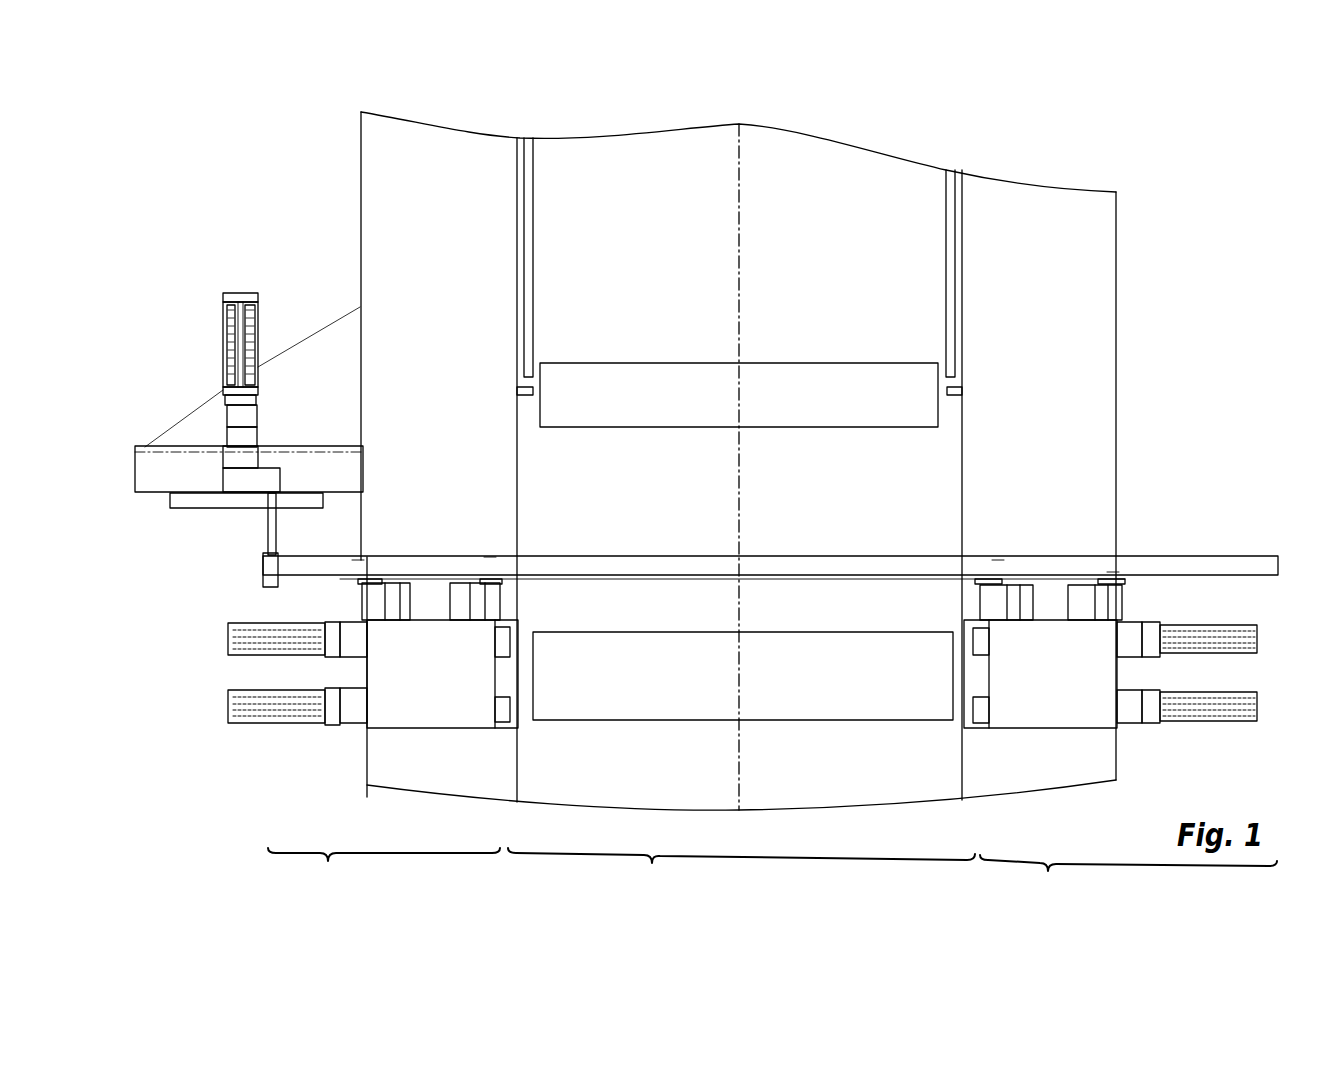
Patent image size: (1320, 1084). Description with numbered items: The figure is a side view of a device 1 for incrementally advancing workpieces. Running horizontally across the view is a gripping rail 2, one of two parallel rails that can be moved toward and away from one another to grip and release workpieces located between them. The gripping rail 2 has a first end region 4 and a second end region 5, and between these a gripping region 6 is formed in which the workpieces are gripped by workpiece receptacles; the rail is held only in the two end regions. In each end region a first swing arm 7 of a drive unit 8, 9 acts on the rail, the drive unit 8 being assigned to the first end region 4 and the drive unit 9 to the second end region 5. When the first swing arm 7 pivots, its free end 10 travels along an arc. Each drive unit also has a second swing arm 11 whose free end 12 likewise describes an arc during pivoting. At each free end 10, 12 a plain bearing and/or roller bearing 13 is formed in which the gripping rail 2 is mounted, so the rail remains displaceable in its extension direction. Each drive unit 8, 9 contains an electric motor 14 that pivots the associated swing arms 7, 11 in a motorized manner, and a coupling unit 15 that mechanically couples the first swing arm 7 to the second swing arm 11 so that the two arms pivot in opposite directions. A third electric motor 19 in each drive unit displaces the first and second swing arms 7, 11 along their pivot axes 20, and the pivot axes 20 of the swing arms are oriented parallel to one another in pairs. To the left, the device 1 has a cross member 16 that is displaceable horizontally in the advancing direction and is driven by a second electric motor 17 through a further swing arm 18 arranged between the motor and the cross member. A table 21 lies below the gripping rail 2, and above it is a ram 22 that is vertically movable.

The device 1 is at (1200, 402).
The gripping rail 2 is at (1132, 562).
The first end region 4 is at (384, 874).
The second end region 5 is at (1128, 882).
The gripping region 6 is at (741, 877).
The first swing arm 7 is at (387, 590).
The drive unit 8 is at (320, 740).
The drive unit 9 is at (1148, 738).
The free end 10 is at (355, 580).
The second swing arm 11 is at (470, 590).
The free end 12 is at (488, 608).
The plain bearing and/or roller bearing 13 is at (490, 560).
The electric motor 14 is at (235, 642).
The coupling unit 15 is at (398, 703).
The cross member 16 is at (228, 515).
The second electric motor 17 is at (228, 328).
The further swing arm 18 is at (258, 482).
The third electric motor 19 is at (232, 717).
The pivot axis 20 is at (407, 603).
The table 21 is at (648, 673).
The ram 22 is at (618, 388).